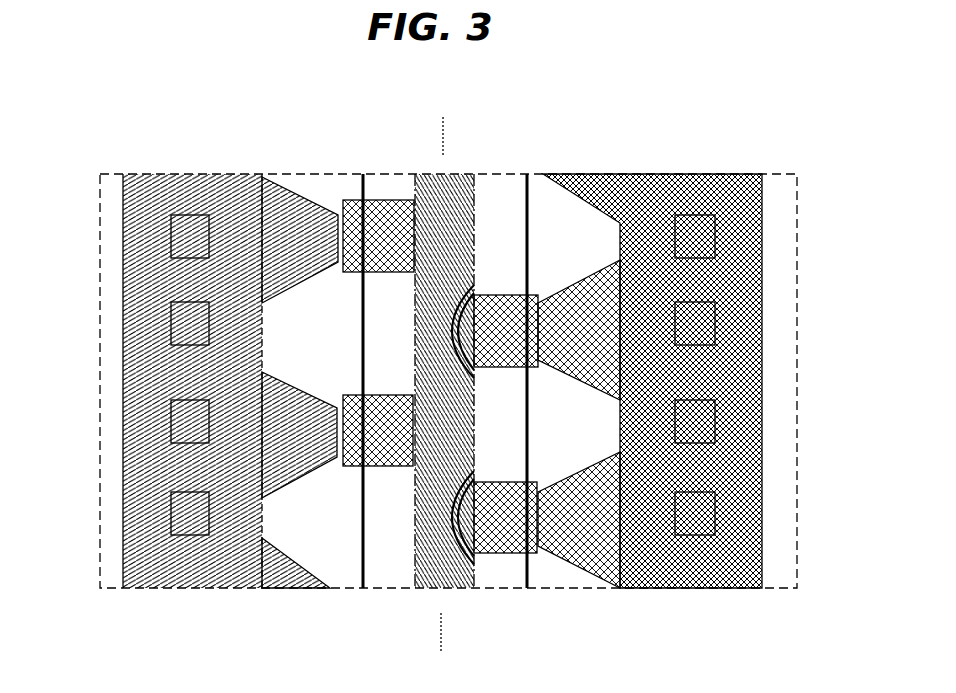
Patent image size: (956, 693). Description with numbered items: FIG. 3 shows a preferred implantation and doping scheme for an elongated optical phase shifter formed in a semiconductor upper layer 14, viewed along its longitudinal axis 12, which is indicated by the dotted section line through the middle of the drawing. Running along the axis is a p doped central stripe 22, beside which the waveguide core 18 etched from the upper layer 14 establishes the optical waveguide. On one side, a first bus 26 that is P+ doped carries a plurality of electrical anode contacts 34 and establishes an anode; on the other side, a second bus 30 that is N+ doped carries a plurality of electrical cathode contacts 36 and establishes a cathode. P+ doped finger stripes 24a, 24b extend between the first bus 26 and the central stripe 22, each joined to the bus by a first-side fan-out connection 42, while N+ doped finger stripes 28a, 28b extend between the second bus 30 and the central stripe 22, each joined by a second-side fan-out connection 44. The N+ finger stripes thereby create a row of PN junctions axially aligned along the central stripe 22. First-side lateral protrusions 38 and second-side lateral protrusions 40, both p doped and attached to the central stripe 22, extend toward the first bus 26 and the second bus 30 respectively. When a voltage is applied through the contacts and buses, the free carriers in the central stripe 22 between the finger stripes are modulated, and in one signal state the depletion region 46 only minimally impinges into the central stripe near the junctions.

The longitudinal axis 12 is at (443, 130).
The upper layer 14 is at (783, 529).
The waveguide core 18 is at (363, 187).
The p doped central stripe 22 is at (458, 178).
The P+ doped finger stripe 24a is at (337, 468).
The P+ doped finger stripe 24b is at (342, 228).
The first bus 26 is at (148, 270).
The N+ doped finger stripe 28a is at (543, 553).
The N+ doped finger stripe 28b is at (545, 295).
The second bus 30 is at (743, 408).
The electrical anode contacts 34 is at (183, 418).
The electrical cathode contacts 36 is at (715, 228).
The first-side lateral protrusions 38 is at (388, 468).
The second-side lateral protrusions 40 is at (493, 553).
The first-side fan-out connection 42 is at (300, 452).
The second-side fan-out connection 44 is at (610, 520).
The depletion region 46 is at (477, 230).